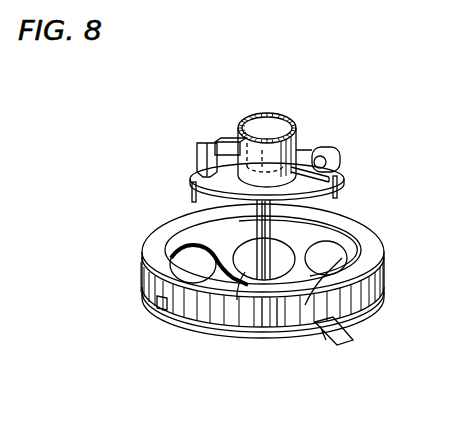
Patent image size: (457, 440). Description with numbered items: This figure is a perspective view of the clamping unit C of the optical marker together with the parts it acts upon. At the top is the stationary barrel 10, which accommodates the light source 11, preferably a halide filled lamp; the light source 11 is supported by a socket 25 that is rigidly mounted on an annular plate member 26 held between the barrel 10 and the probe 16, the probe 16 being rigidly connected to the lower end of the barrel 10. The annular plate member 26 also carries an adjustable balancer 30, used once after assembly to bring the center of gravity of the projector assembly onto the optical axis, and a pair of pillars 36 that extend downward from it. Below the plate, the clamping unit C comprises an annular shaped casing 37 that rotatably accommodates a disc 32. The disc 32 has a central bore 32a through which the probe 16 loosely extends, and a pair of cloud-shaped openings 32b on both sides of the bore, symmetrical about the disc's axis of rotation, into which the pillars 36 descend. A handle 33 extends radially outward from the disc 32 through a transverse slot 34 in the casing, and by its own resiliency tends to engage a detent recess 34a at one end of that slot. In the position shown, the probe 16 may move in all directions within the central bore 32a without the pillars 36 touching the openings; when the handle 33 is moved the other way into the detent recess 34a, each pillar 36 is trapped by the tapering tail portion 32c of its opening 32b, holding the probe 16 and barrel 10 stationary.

The stationary barrel 10 is at (291, 114).
The light source 11 is at (296, 143).
The socket 25 is at (222, 142).
The annular plate member 26 is at (193, 178).
The adjustable balancer 30 is at (340, 155).
The pillars 36 is at (338, 192).
The probe 16 is at (338, 213).
The clamping unit C is at (404, 281).
The disc 32 is at (383, 300).
The central bore 32a is at (233, 240).
The cloud-shaped openings 32b is at (323, 262).
The tapering tail portion 32c is at (235, 292).
The handle 33 is at (332, 348).
The transverse slot 34 is at (178, 323).
The detent recess 34a is at (160, 303).
The annular shaped casing 37 is at (263, 328).